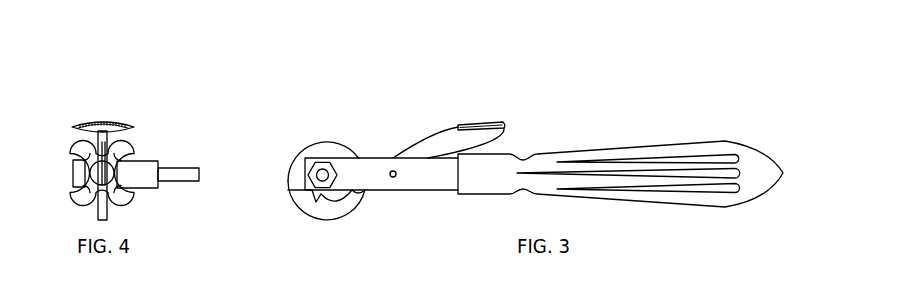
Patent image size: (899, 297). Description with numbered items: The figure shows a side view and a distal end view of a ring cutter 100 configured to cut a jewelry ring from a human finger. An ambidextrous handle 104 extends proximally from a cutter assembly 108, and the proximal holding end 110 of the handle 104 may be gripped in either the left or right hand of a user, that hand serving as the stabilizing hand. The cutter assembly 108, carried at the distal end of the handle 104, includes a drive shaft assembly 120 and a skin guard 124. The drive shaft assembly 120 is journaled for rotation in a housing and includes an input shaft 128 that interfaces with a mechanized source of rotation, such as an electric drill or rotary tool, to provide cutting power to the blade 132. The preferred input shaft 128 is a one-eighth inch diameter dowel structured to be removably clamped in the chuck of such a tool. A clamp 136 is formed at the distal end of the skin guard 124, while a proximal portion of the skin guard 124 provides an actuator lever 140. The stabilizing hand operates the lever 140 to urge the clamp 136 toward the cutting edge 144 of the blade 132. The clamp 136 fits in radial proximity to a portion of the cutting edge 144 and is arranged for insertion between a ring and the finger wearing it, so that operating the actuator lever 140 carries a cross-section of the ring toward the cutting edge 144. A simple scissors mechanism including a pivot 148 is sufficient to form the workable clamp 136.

In FIG. 4, the ring cutter 100 is at (131, 133).
In FIG. 3, the ring cutter 100 is at (499, 139).
In FIG. 3, the ambidextrous handle 104 is at (750, 170).
In FIG. 3, the cutter assembly 108 is at (318, 119).
In FIG. 3, the proximal holding end 110 is at (694, 103).
In FIG. 3, the drive shaft assembly 120 is at (345, 128).
In FIG. 3, the skin guard 124 is at (357, 203).
In FIG. 4, the input shaft 128 is at (180, 168).
In FIG. 3, the blade 132 is at (312, 150).
In FIG. 3, the clamp 136 is at (293, 229).
In FIG. 4, the actuator lever 140 is at (78, 122).
In FIG. 3, the actuator lever 140 is at (480, 126).
In FIG. 3, the cutting edge 144 is at (290, 165).
In FIG. 3, the pivot 148 is at (393, 171).